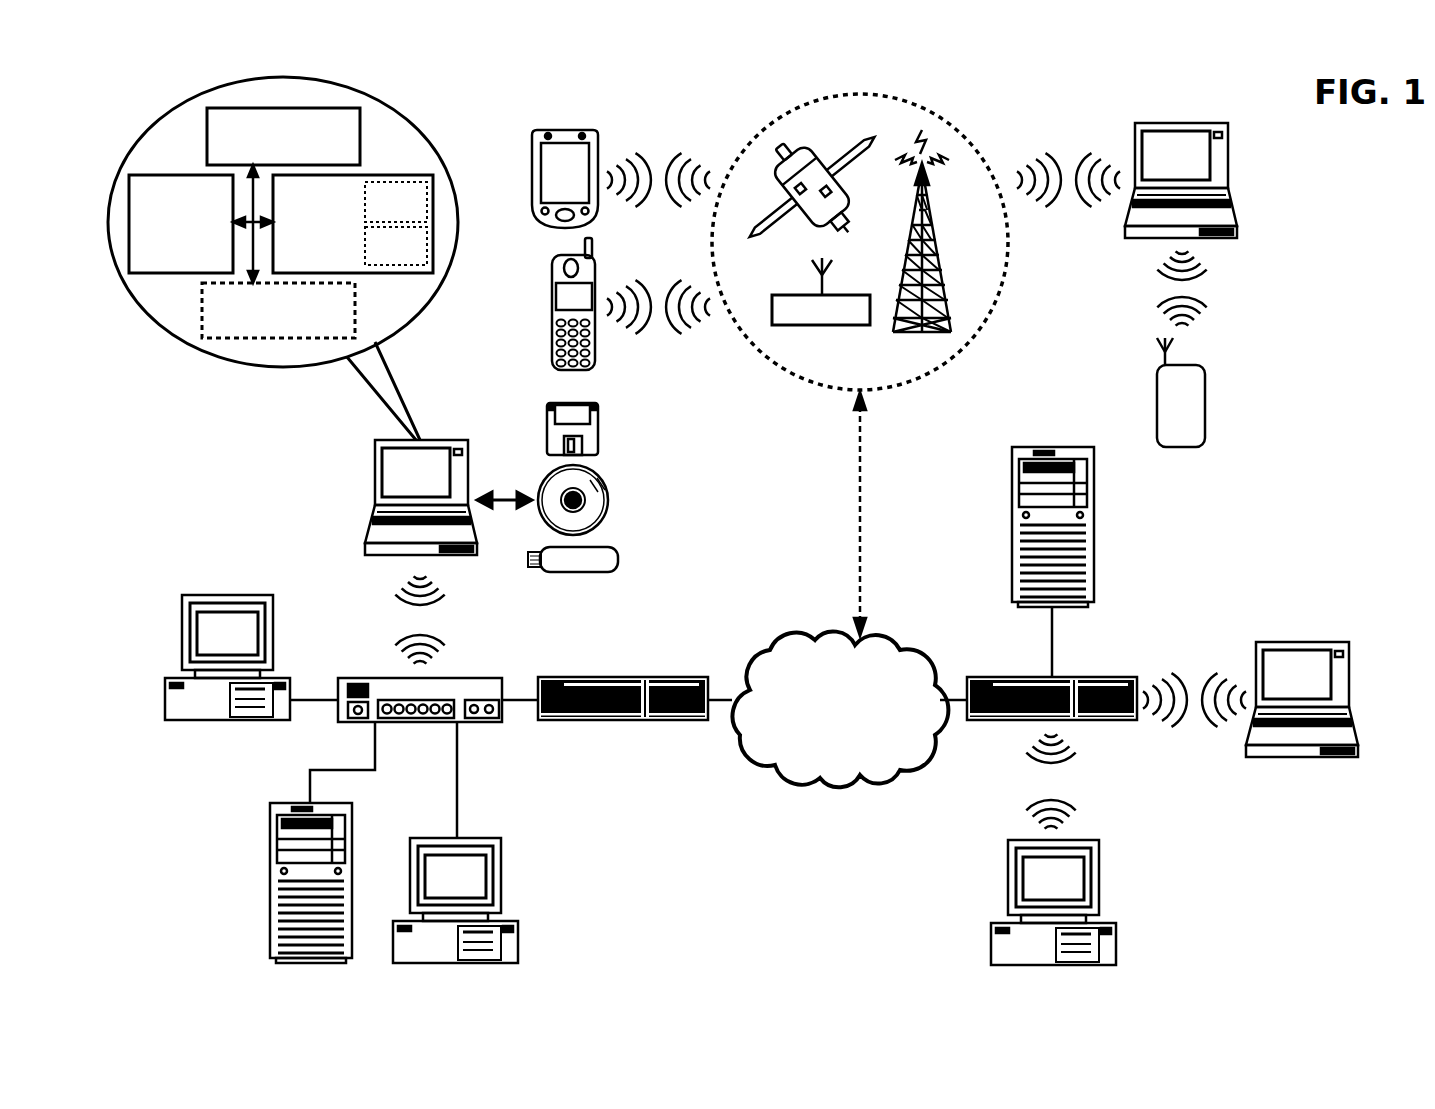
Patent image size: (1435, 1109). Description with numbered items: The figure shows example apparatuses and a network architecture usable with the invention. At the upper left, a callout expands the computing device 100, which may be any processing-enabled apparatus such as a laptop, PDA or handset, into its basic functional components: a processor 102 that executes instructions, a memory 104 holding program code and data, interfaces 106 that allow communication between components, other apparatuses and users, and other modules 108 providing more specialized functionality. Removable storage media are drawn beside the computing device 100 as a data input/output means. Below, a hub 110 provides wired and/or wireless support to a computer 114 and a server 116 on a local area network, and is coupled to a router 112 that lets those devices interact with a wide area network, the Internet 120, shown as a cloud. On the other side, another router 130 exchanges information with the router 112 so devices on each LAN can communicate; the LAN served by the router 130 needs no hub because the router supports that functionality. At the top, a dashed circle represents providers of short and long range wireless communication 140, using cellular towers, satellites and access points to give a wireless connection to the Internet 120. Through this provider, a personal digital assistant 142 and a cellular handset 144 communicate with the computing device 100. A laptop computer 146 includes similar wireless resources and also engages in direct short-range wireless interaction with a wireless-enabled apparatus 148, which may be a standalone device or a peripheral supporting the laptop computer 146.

The computing device 100 is at (372, 472).
The processor 102 is at (181, 224).
The memory 104 is at (353, 224).
The interfaces 106 is at (283, 136).
The other modules 108 is at (278, 310).
The hub 110 is at (468, 680).
The router 112 is at (675, 677).
The computer 114 is at (170, 674).
The server 116 is at (268, 877).
The Internet 120 is at (763, 767).
The router 130 is at (1089, 679).
The wireless communication 140 is at (982, 152).
The personal digital assistant 142 is at (532, 177).
The cellular handset 144 is at (552, 302).
The laptop computer 146 is at (1232, 177).
The wireless-enabled apparatus 148 is at (1208, 405).